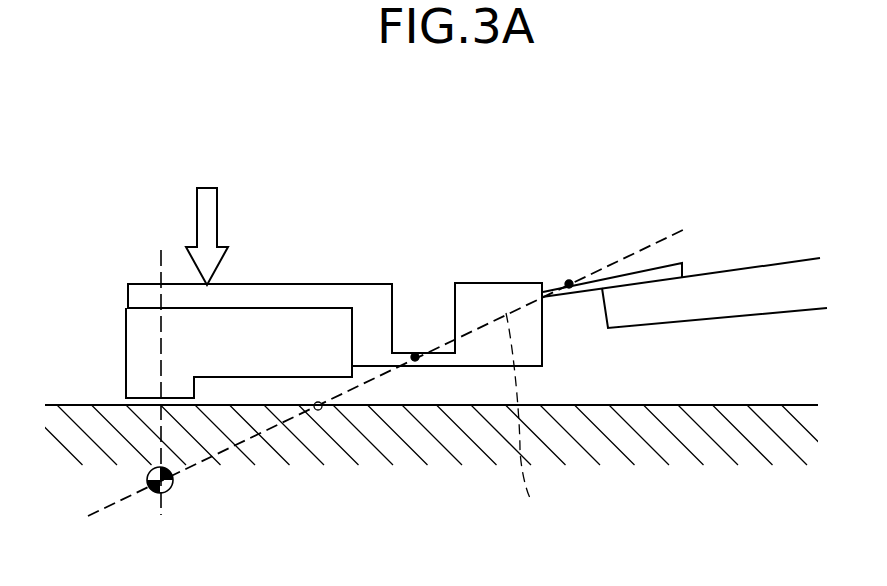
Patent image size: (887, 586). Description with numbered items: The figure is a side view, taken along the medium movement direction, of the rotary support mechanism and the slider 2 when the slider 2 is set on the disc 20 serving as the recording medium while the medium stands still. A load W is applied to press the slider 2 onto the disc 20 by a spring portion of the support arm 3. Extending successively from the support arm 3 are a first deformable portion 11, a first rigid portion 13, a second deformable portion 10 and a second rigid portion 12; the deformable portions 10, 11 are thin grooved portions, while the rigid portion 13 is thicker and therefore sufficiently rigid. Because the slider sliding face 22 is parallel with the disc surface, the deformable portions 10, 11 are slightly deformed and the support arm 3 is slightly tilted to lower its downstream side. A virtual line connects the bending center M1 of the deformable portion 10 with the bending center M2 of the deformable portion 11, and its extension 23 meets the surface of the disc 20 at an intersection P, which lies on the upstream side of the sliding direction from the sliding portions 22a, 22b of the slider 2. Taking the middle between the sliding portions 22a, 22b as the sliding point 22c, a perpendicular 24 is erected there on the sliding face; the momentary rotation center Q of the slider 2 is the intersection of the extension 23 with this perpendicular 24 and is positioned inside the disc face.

The slider 2 is at (138, 338).
The support arm 3 is at (745, 282).
The second deformable portion 10 is at (404, 353).
The first deformable portion 11 is at (547, 284).
The second rigid portion 12 is at (390, 270).
The first rigid portion 13 is at (496, 290).
The disc 20 is at (660, 440).
The slider sliding face 22 is at (143, 405).
The sliding portion 22a is at (127, 398).
The sliding portion 22b is at (197, 398).
The sliding point 22c is at (160, 398).
The extension of virtual line 23 is at (527, 422).
The perpendicular 24 is at (158, 256).
The load W is at (207, 221).
The intersection P is at (322, 409).
The momentary rotation center Q is at (177, 486).
The bending center M1 is at (417, 360).
The bending center M2 is at (571, 284).